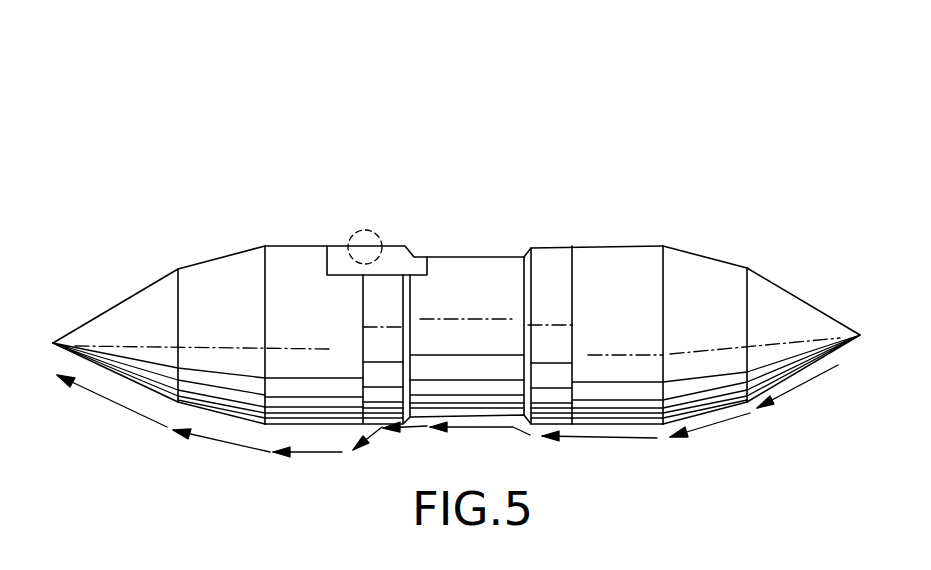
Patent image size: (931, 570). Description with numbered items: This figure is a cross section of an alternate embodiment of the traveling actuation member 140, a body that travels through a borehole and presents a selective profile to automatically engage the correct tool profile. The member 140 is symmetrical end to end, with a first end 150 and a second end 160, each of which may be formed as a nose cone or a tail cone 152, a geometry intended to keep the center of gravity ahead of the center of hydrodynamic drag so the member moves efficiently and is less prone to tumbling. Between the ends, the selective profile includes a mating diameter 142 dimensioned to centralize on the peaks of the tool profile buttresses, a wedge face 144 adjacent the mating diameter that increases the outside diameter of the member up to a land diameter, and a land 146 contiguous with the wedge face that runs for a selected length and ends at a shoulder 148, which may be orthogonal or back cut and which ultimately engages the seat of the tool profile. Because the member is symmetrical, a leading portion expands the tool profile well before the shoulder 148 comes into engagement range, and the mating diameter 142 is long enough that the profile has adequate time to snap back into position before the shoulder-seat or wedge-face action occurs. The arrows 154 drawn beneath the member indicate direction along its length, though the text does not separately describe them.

The traveling actuation member 140 is at (606, 132).
The mating diameter 142 is at (475, 257).
The wedge face 144 is at (412, 248).
The land 146 is at (387, 253).
The shoulder 148 is at (362, 247).
The first end 150 is at (801, 230).
The tail cone 152 is at (802, 370).
The flow direction arrows 154 is at (120, 373).
The second end 160 is at (126, 251).